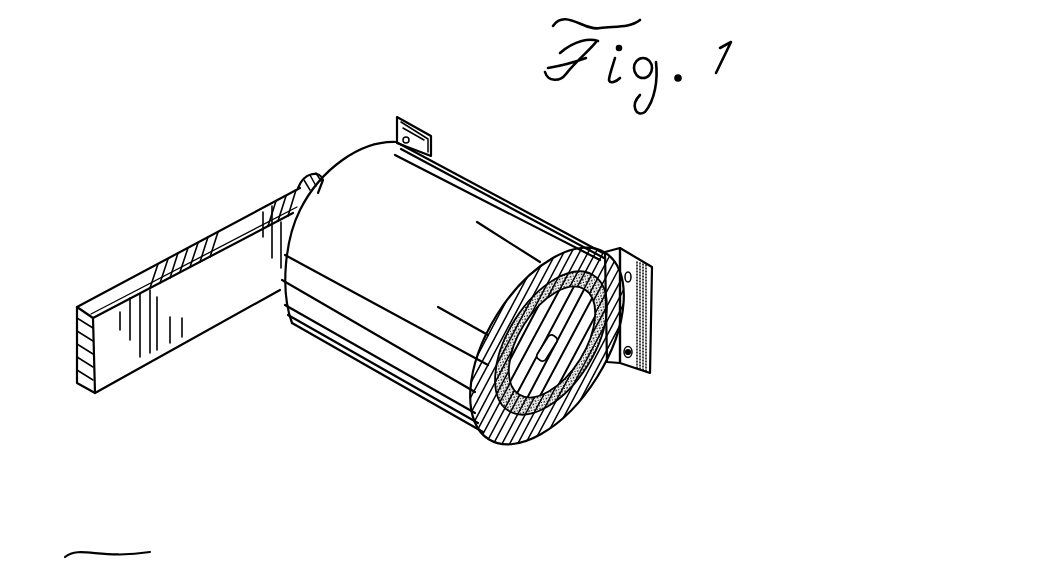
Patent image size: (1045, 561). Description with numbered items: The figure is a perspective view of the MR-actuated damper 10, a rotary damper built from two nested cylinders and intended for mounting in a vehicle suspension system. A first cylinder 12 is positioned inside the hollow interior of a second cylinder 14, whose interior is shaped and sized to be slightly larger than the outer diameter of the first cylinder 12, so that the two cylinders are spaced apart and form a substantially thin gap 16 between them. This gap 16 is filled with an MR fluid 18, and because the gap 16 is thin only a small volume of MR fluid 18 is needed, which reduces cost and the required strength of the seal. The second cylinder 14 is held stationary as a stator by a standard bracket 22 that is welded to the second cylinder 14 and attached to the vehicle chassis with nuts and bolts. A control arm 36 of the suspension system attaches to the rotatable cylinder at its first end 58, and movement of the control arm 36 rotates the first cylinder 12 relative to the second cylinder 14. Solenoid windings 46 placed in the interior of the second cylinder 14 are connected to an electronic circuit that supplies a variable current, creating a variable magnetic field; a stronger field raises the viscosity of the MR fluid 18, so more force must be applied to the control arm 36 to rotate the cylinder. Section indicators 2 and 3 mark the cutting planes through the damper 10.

The MR-actuated damper 10 is at (345, 96).
The first cylinder 12 is at (543, 427).
The second cylinder 14 is at (507, 440).
The gap 16 is at (565, 296).
The MR fluid 18 is at (568, 288).
The bracket 22 is at (640, 322).
The control arm 36 is at (198, 292).
The solenoid windings 46 is at (513, 307).
The first end of the control arm 58 is at (301, 173).
The section line 2 is at (420, 422).
The section line 3 is at (262, 181).